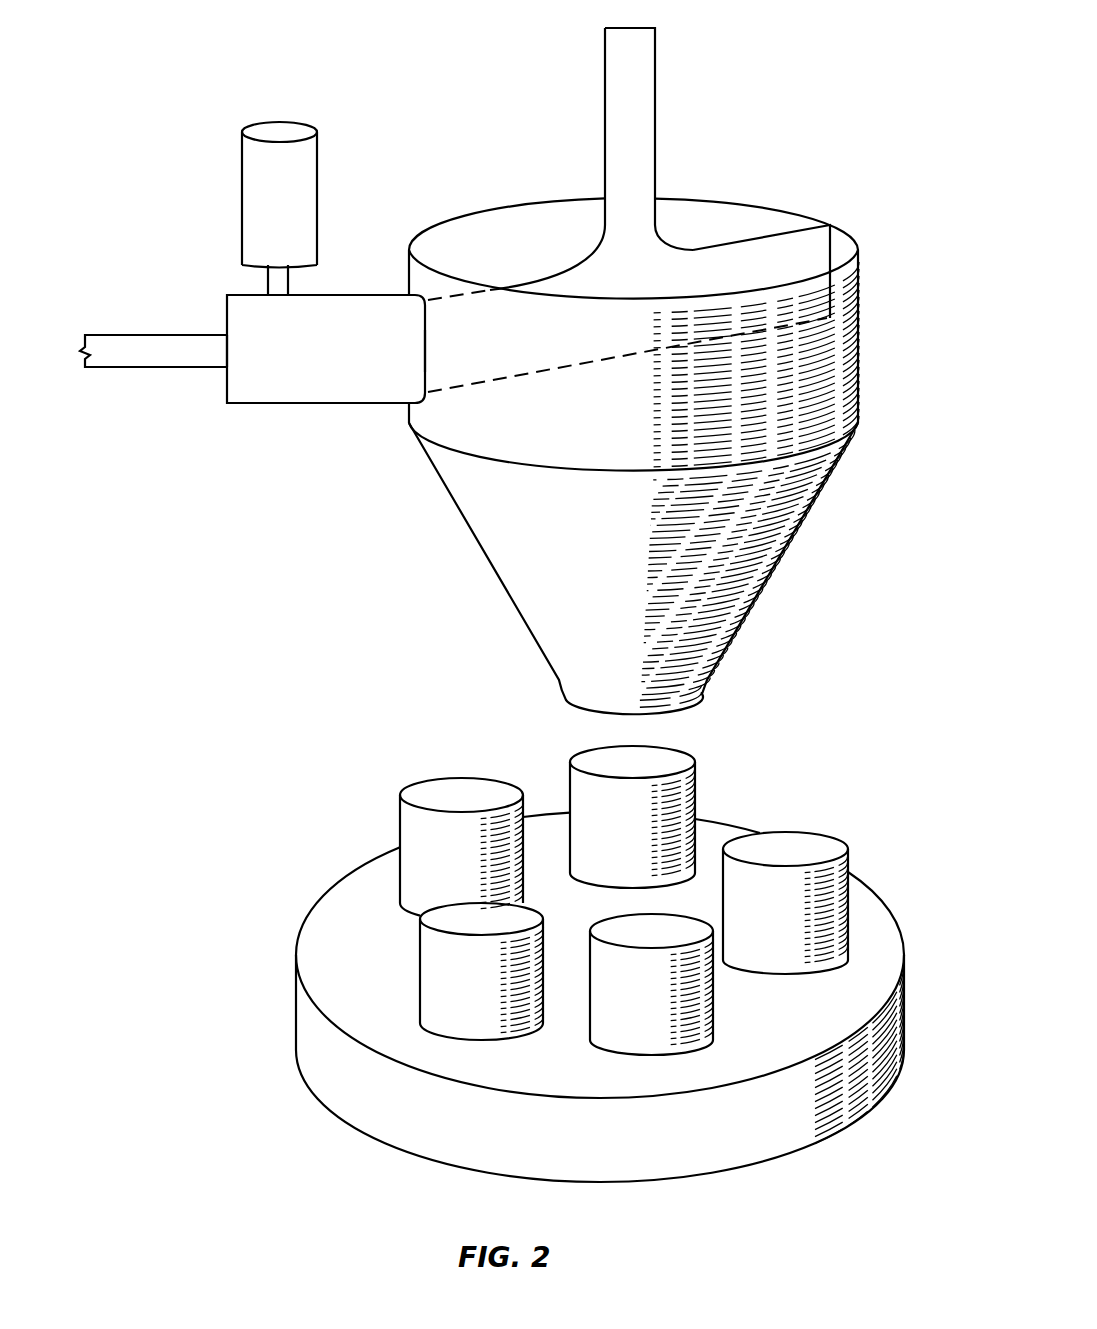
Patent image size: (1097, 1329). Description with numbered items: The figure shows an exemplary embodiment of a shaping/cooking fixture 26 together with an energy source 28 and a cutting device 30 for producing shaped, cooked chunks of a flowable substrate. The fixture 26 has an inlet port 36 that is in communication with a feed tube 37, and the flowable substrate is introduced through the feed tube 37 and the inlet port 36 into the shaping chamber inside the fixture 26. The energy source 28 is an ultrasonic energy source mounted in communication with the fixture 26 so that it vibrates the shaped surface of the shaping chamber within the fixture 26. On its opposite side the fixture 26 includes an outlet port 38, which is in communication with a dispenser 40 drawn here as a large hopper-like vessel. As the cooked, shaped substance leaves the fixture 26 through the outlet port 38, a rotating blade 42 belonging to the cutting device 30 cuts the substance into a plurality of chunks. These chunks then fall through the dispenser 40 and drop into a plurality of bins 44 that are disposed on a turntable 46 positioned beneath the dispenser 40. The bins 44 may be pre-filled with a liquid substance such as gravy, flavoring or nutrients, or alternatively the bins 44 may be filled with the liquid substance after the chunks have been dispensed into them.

The shaping/cooking fixture 26 is at (325, 293).
The energy source 28 is at (278, 132).
The cutting device 30 is at (666, 58).
The inlet port 36 is at (228, 350).
The feed tube 37 is at (132, 333).
The outlet port 38 is at (428, 338).
The dispenser 40 is at (792, 535).
The rotating blade 42 is at (757, 237).
The bins 44 is at (400, 825).
The turntable 46 is at (295, 1007).